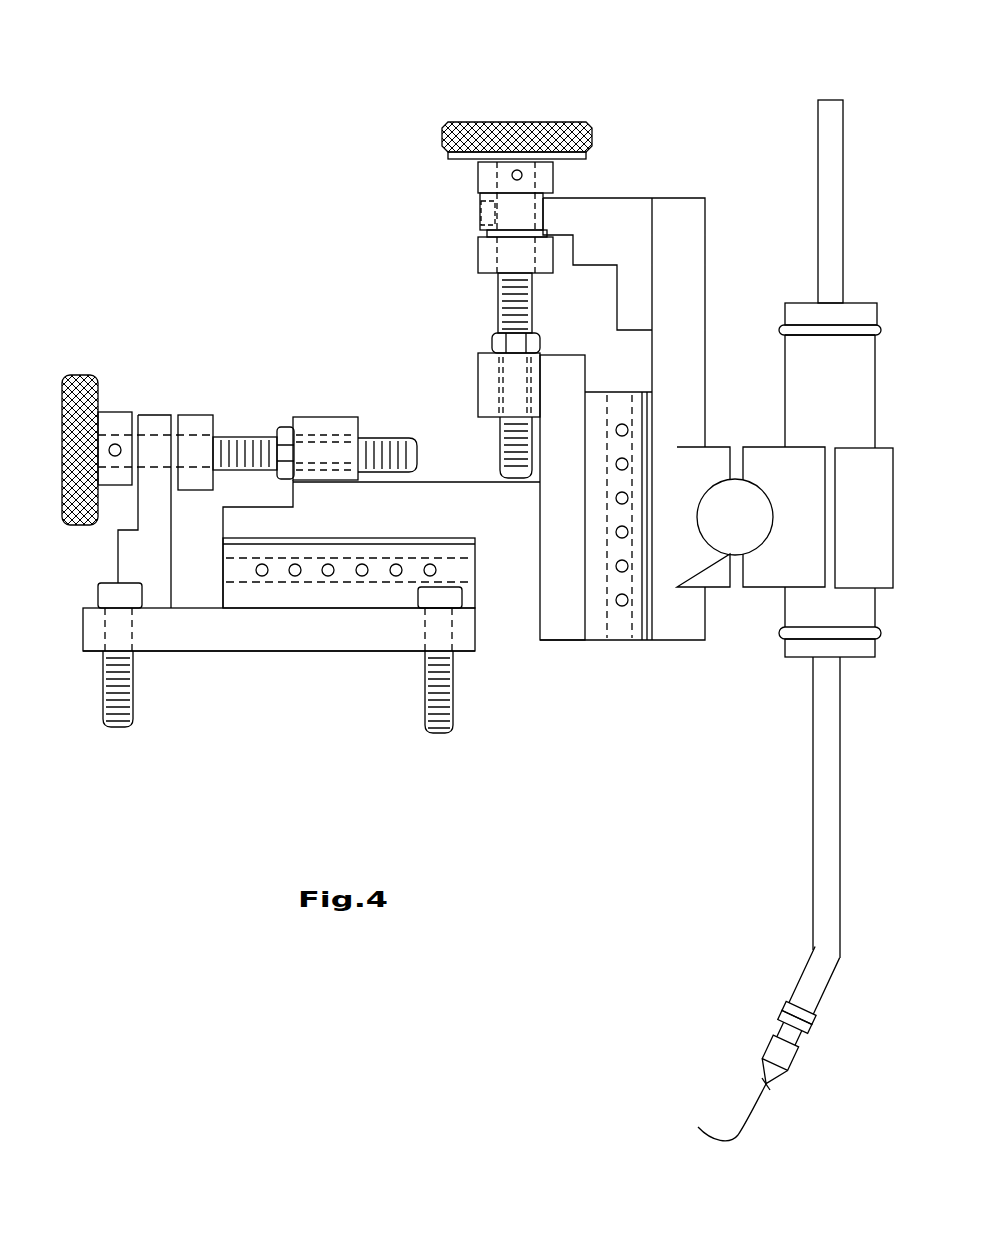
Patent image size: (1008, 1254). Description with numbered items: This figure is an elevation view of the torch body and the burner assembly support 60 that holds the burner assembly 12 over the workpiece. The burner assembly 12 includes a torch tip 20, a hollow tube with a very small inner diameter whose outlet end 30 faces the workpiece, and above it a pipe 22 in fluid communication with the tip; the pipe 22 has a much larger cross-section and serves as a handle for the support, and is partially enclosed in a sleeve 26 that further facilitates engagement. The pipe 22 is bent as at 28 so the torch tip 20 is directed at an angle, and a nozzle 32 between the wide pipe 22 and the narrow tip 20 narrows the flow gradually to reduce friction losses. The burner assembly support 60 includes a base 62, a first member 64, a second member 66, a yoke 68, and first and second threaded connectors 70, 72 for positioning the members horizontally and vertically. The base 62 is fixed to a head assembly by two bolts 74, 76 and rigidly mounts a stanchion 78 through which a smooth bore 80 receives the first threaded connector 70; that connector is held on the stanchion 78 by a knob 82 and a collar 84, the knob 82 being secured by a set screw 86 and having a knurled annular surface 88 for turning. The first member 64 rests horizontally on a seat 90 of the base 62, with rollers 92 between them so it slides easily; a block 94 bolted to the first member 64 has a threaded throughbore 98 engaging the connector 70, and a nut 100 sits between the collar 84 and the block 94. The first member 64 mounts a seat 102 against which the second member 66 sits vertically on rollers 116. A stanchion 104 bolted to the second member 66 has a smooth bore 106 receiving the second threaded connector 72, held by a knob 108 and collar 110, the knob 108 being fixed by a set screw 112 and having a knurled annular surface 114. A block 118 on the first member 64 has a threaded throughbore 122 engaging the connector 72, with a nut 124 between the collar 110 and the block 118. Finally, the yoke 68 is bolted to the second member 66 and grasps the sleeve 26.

The burner assembly 12 is at (783, 122).
The torch tip 20 is at (770, 1087).
The pipe 22 is at (822, 838).
The sleeve 26 is at (795, 648).
The bend 28 is at (812, 950).
The outlet end 30 is at (723, 1112).
The nozzle 32 is at (777, 1050).
The burner assembly support 60 is at (302, 697).
The base 62 is at (213, 630).
The first member 64 is at (498, 515).
The second member 66 is at (682, 397).
The yoke 68 is at (768, 572).
The first threaded connector 70 is at (250, 440).
The second threaded connector 72 is at (508, 317).
The bolt 74 is at (110, 697).
The bolt 76 is at (448, 685).
The stanchion 78 is at (135, 558).
The smooth bore 80 is at (173, 440).
The knob 82 is at (103, 402).
The collar 84 is at (197, 415).
The set screw 86 is at (118, 444).
The annular surface 88 is at (63, 395).
The seat 90 is at (240, 592).
The rollers 92 is at (290, 567).
The block 94 is at (345, 420).
The threaded throughbore 98 is at (323, 438).
The nut 100 is at (283, 472).
The seat 102 is at (615, 632).
The stanchion 104 is at (627, 217).
The smooth bore 106 is at (493, 208).
The knob 108 is at (493, 173).
The collar 110 is at (490, 248).
The set screw 112 is at (522, 178).
The annular surface 114 is at (462, 122).
The rollers 116 is at (622, 424).
The block 118 is at (475, 387).
The threaded throughbore 122 is at (495, 420).
The nut 124 is at (533, 349).